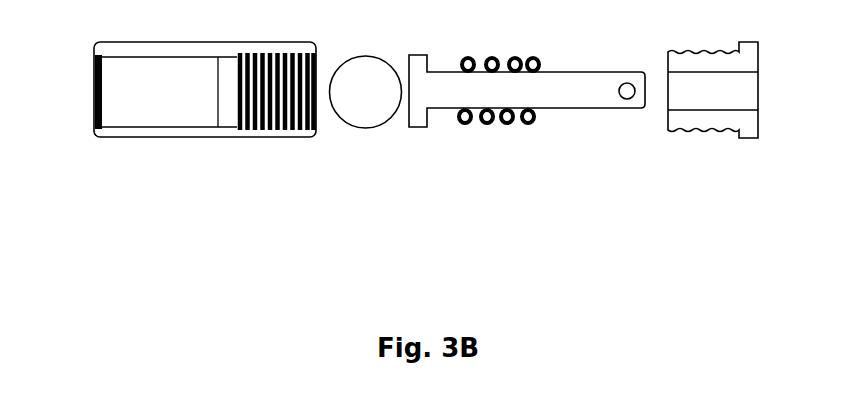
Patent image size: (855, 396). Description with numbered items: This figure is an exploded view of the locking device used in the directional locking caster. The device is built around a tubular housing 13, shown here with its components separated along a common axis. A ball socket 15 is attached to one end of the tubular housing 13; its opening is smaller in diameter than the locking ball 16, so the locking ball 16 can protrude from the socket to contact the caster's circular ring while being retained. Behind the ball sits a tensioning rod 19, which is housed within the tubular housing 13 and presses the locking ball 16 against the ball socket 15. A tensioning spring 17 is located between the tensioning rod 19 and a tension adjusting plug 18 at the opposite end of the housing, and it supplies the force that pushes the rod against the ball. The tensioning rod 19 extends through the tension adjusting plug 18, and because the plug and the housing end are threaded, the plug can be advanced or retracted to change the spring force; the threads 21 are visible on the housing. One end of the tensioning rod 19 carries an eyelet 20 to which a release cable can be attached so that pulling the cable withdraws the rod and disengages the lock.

The tubular housing 13 is at (173, 138).
The ball socket 15 is at (96, 118).
The locking ball 16 is at (362, 115).
The tensioning spring 17 is at (463, 125).
The tension adjusting plug 18 is at (750, 123).
The tensioning rod 19 is at (560, 98).
The eyelet 20 is at (626, 99).
The threads 21 is at (285, 112).